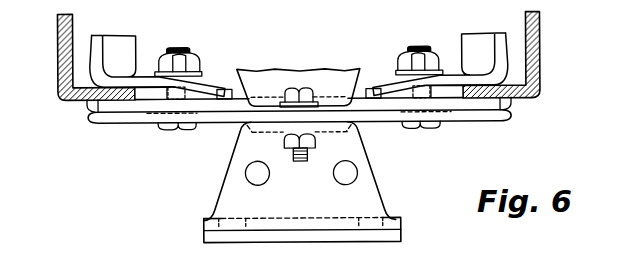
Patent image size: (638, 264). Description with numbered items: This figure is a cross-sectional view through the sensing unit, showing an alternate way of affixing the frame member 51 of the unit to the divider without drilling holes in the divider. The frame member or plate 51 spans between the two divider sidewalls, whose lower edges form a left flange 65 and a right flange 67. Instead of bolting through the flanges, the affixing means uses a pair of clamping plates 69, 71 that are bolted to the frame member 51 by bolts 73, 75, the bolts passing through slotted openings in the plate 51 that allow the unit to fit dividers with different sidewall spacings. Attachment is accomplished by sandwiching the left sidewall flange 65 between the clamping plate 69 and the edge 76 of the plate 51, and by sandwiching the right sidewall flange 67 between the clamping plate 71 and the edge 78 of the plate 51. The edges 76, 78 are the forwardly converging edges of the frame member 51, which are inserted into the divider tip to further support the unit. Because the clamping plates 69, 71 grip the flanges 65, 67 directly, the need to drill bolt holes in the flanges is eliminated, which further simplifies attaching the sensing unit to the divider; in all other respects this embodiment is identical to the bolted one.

The frame member 51 is at (226, 131).
The left flange 65 is at (80, 99).
The right flange 67 is at (531, 98).
The clamping plate 69 is at (120, 42).
The clamping plate 71 is at (476, 42).
The bolt 73 is at (193, 59).
The bolt 75 is at (400, 57).
The forwardly converging edge 76 is at (92, 112).
The forwardly converging edge 78 is at (508, 113).